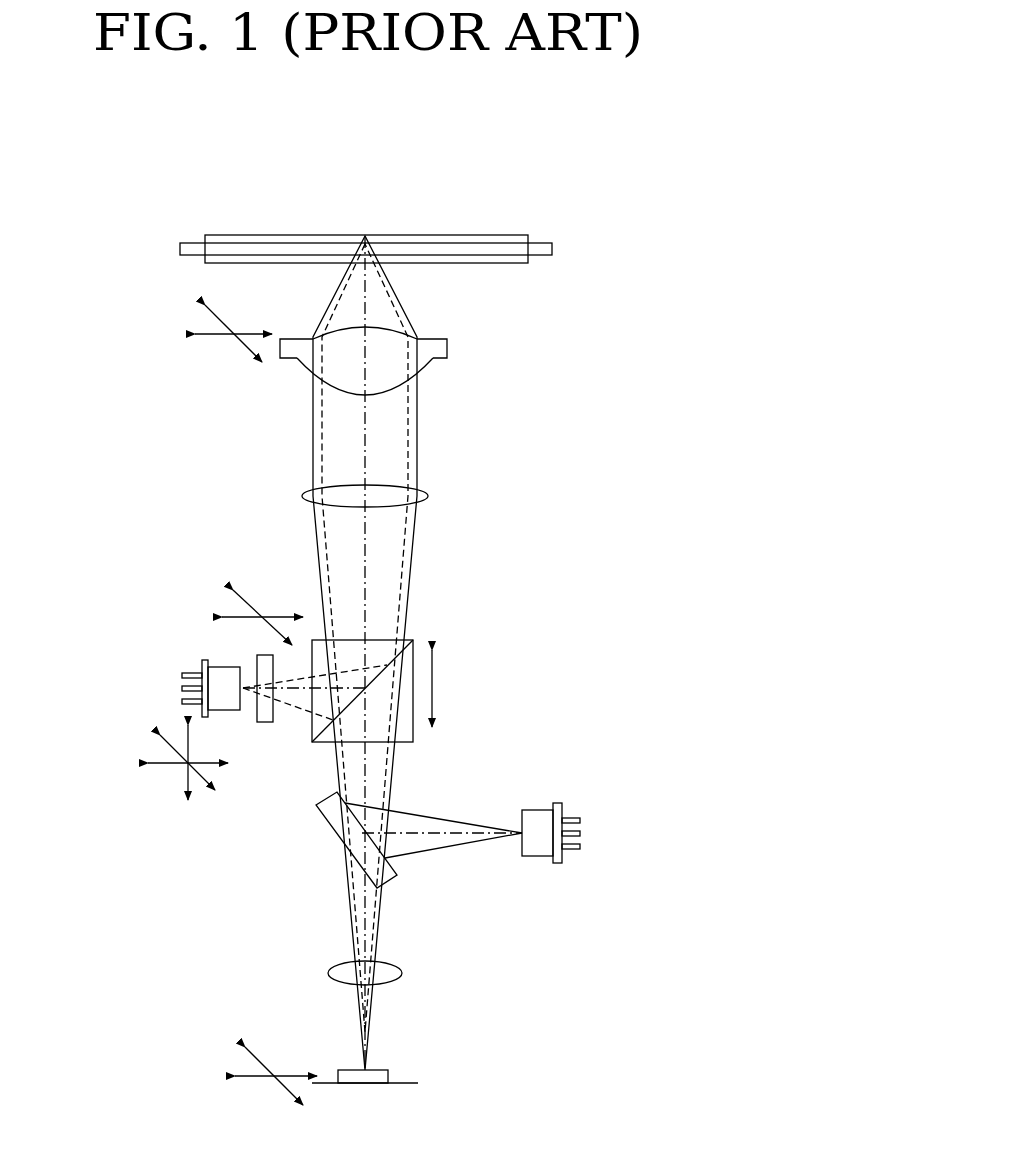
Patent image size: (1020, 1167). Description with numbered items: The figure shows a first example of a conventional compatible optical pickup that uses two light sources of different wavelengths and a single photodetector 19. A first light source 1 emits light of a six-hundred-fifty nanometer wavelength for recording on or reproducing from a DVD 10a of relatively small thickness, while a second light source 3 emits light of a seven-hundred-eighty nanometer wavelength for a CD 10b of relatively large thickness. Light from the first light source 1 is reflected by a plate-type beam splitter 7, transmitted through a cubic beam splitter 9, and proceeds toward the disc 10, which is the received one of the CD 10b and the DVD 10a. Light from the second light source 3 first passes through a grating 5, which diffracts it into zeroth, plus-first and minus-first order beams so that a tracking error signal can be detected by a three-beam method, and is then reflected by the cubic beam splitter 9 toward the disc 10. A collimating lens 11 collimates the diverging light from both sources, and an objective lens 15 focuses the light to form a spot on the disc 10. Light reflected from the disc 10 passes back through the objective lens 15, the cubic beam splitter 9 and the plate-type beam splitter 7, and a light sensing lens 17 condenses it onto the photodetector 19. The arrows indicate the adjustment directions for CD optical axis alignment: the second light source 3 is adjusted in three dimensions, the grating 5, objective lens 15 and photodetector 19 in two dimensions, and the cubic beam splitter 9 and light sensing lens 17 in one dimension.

The first light source 1 is at (537, 858).
The second light source 3 is at (227, 712).
The grating 5 is at (265, 724).
The plate-type beam splitter 7 is at (395, 877).
The cubic beam splitter 9 is at (413, 744).
The disc 10 is at (427, 206).
The DVD 10a is at (552, 249).
The CD 10b is at (505, 234).
The collimating lens 11 is at (428, 496).
The objective lens 15 is at (447, 349).
The light sensing lens 17 is at (402, 973).
The photodetector 19 is at (388, 1076).